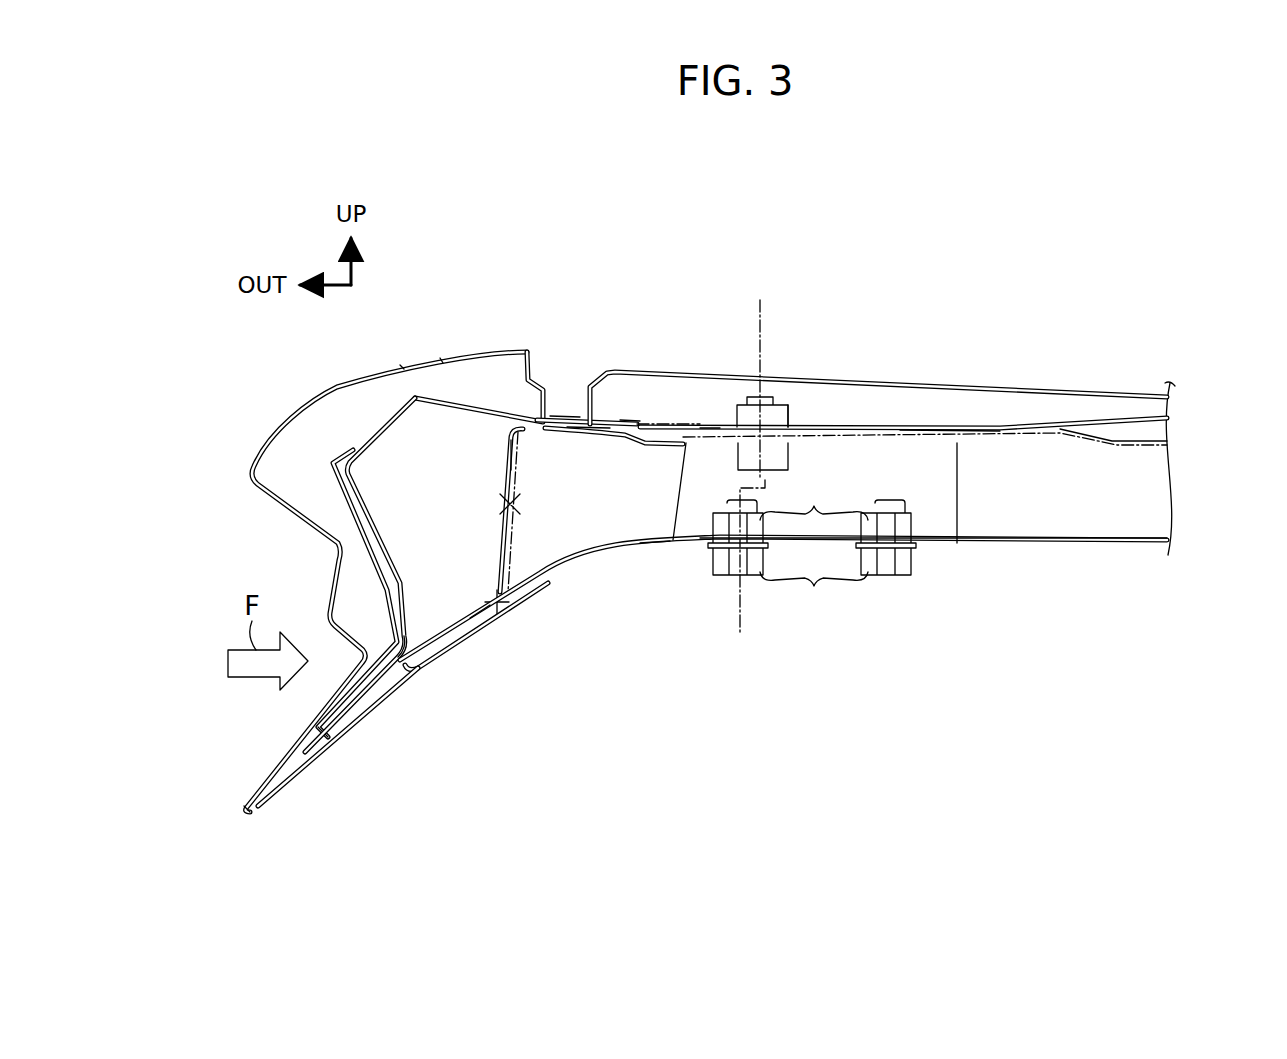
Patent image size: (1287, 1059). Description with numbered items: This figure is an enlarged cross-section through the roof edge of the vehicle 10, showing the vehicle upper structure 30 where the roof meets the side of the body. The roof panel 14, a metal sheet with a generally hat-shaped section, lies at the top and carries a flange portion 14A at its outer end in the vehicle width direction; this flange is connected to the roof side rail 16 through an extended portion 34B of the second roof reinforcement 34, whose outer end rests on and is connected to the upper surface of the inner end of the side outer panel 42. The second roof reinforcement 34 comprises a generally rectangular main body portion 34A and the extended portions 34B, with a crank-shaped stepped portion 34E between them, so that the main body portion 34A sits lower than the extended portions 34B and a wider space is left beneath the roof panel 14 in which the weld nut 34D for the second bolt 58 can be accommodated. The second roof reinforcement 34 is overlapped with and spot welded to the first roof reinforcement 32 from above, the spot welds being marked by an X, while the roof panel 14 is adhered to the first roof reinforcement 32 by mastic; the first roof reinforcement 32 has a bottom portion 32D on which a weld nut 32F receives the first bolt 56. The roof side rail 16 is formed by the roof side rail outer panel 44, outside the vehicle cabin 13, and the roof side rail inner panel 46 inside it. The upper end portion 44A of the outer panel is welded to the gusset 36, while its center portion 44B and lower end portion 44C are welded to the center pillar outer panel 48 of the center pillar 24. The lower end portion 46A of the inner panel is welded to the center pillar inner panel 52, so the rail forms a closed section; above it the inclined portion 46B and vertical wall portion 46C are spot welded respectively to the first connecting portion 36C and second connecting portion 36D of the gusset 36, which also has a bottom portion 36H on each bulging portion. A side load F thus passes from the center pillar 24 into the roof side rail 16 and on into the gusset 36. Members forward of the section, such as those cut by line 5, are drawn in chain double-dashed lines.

The vehicle 10 is at (1116, 325).
The vehicle cabin 13 is at (641, 673).
The roof panel 14 is at (1066, 390).
The flange portion 14A is at (565, 418).
The roof side rail 16 is at (455, 388).
The center pillar 24 is at (282, 792).
The vehicle upper structure 30 is at (553, 608).
The first roof reinforcement 32 is at (1050, 548).
The bottom portion 32D is at (975, 548).
The weld nut 32F is at (814, 497).
The second roof reinforcement 34 is at (982, 420).
The main body portion 34A is at (905, 427).
The extended portion 34B is at (626, 417).
The weld nut 34D is at (788, 415).
The stepped portion 34E is at (712, 427).
The gusset 36 is at (585, 560).
The first connecting portion 36C is at (480, 630).
The second connecting portion 36D is at (520, 522).
The bottom portion 36H is at (655, 545).
The side outer panel 42 is at (352, 388).
The roof side rail outer panel 44 is at (481, 400).
The upper end portion 44A is at (576, 436).
The center portion 44B is at (388, 430).
The lower end portion 44C is at (405, 640).
The roof side rail inner panel 46 is at (505, 558).
The lower end portion 46A is at (385, 690).
The inclined portion 46B is at (443, 660).
The vertical wall portion 46C is at (503, 470).
The center pillar outer panel 48 is at (333, 480).
The center pillar inner panel 52 is at (338, 738).
The first bolt 56 is at (812, 558).
The second bolt 58 is at (790, 453).
The section line 5 is at (766, 298).